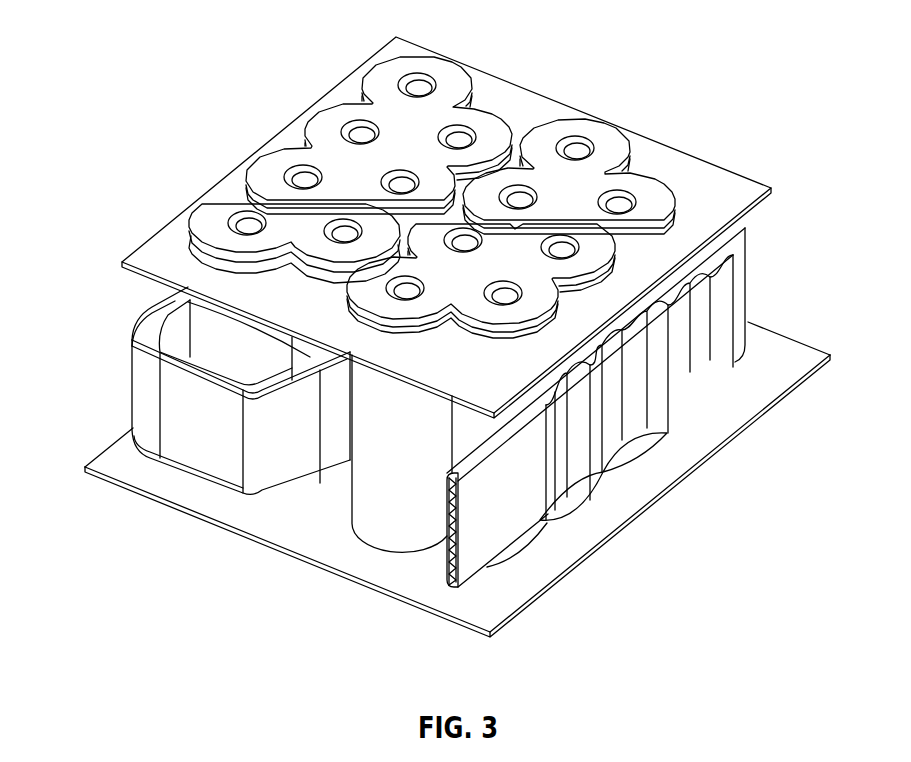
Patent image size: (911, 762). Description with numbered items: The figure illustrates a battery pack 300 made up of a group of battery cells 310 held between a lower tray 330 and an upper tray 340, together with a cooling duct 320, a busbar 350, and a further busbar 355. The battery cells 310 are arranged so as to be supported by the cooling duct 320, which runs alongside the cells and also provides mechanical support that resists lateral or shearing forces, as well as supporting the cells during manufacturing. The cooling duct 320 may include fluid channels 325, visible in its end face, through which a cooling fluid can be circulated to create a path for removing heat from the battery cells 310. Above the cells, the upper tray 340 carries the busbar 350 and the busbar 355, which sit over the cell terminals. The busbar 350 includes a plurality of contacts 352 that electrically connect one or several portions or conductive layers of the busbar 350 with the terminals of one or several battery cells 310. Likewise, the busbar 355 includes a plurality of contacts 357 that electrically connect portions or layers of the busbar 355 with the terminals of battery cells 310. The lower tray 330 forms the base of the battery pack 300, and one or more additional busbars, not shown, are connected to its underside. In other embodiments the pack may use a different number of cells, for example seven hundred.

The battery pack 300 is at (97, 52).
The battery cells 310 is at (212, 330).
The cooling duct 320 is at (750, 268).
The fluid channels 325 is at (447, 580).
The lower tray 330 is at (782, 350).
The upper tray 340 is at (698, 176).
The busbar 350 is at (443, 80).
The contacts 352 is at (415, 88).
The busbar 355 is at (207, 218).
The contacts 357 is at (245, 222).